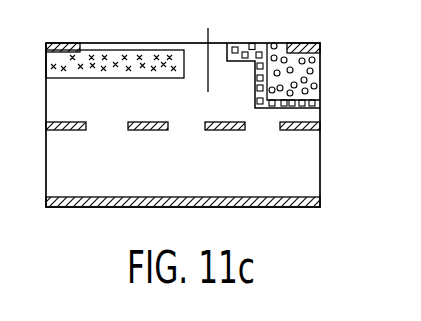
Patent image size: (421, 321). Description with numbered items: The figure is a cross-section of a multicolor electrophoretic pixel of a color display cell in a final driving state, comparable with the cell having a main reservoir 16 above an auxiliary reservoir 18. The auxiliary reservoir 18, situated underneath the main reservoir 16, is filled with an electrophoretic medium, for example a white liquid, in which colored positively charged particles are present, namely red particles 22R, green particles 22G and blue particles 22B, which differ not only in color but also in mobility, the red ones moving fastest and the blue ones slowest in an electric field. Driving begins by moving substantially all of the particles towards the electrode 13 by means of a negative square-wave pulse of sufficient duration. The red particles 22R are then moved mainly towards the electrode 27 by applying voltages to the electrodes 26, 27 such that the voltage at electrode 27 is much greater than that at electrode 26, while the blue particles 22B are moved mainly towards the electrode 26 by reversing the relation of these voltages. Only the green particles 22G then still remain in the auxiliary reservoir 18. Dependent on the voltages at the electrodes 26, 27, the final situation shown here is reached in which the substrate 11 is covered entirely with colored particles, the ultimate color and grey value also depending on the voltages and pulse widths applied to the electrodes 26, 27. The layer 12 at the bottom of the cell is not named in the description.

The substrate 11 is at (178, 42).
The lower electrode layer 12 is at (277, 205).
The electrode 13 is at (315, 125).
The main reservoir 16 is at (207, 47).
The auxiliary reservoir 18 is at (293, 168).
The blue particles 22B is at (133, 62).
The green particles 22G is at (245, 47).
The red particles 22R is at (303, 70).
The electrode 26 is at (58, 43).
The electrode 27 is at (307, 43).